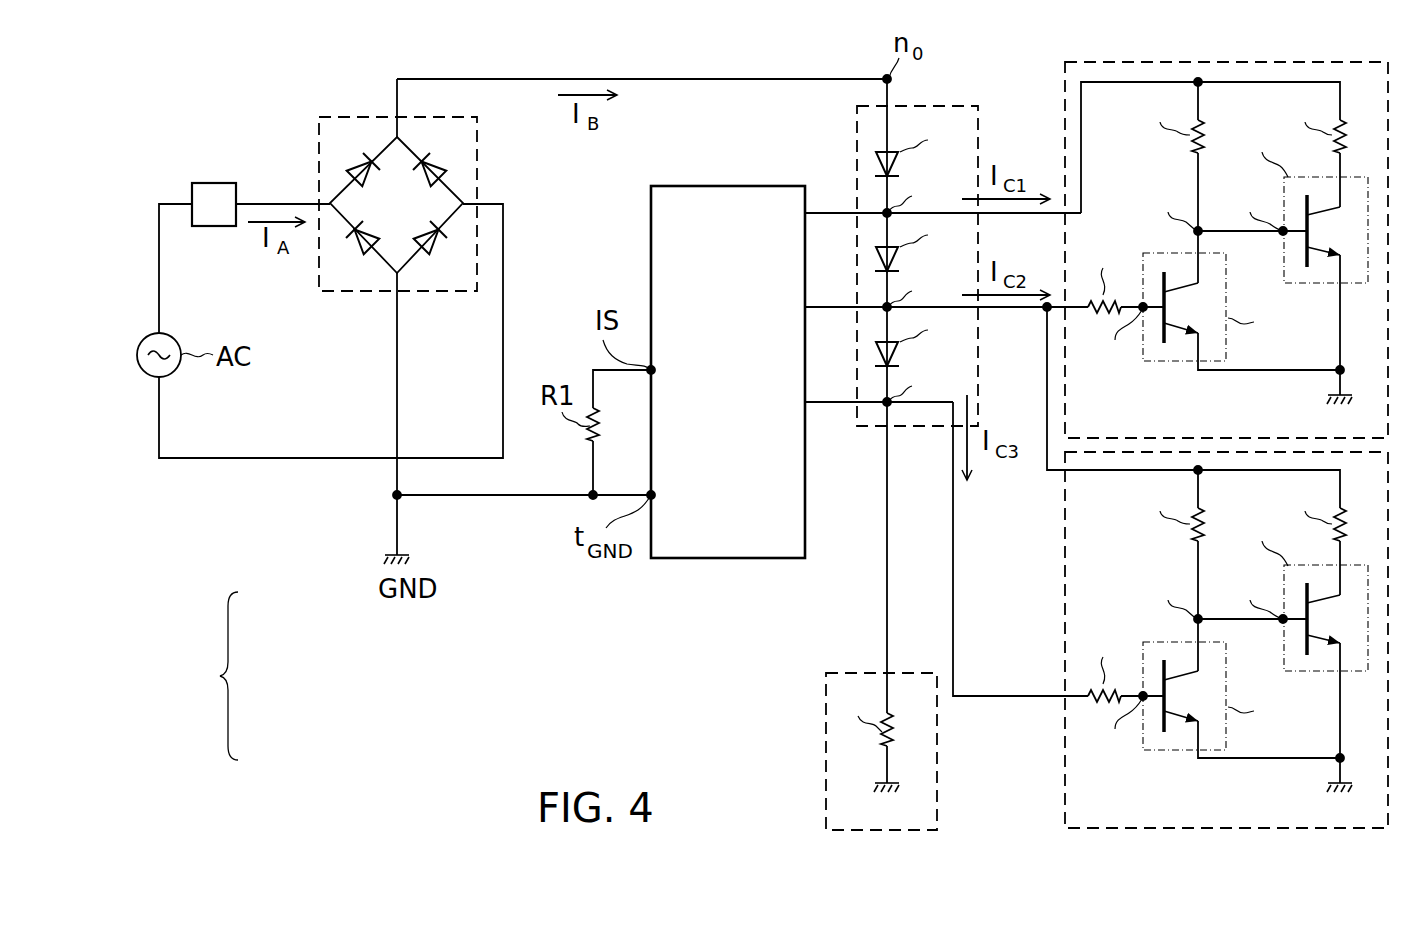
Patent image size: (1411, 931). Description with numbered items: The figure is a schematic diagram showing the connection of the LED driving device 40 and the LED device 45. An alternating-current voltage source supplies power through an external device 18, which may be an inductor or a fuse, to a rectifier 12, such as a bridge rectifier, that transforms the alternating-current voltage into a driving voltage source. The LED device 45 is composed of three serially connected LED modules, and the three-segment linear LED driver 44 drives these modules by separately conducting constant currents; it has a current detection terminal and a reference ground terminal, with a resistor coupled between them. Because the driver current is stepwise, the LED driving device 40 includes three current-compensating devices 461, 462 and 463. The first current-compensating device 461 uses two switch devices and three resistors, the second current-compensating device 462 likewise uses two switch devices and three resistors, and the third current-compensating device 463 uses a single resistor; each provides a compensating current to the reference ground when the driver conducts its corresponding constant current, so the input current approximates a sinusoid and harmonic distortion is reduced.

The rectifier 12 is at (477, 118).
The external device 18 is at (212, 183).
The LED driving device 40 is at (211, 657).
The 3-segment linear LED driver 44 is at (727, 186).
The LED device 45 is at (943, 106).
The current-compensating device 461 is at (1065, 78).
The current-compensating device 462 is at (1063, 545).
The current-compensating device 463 is at (850, 673).